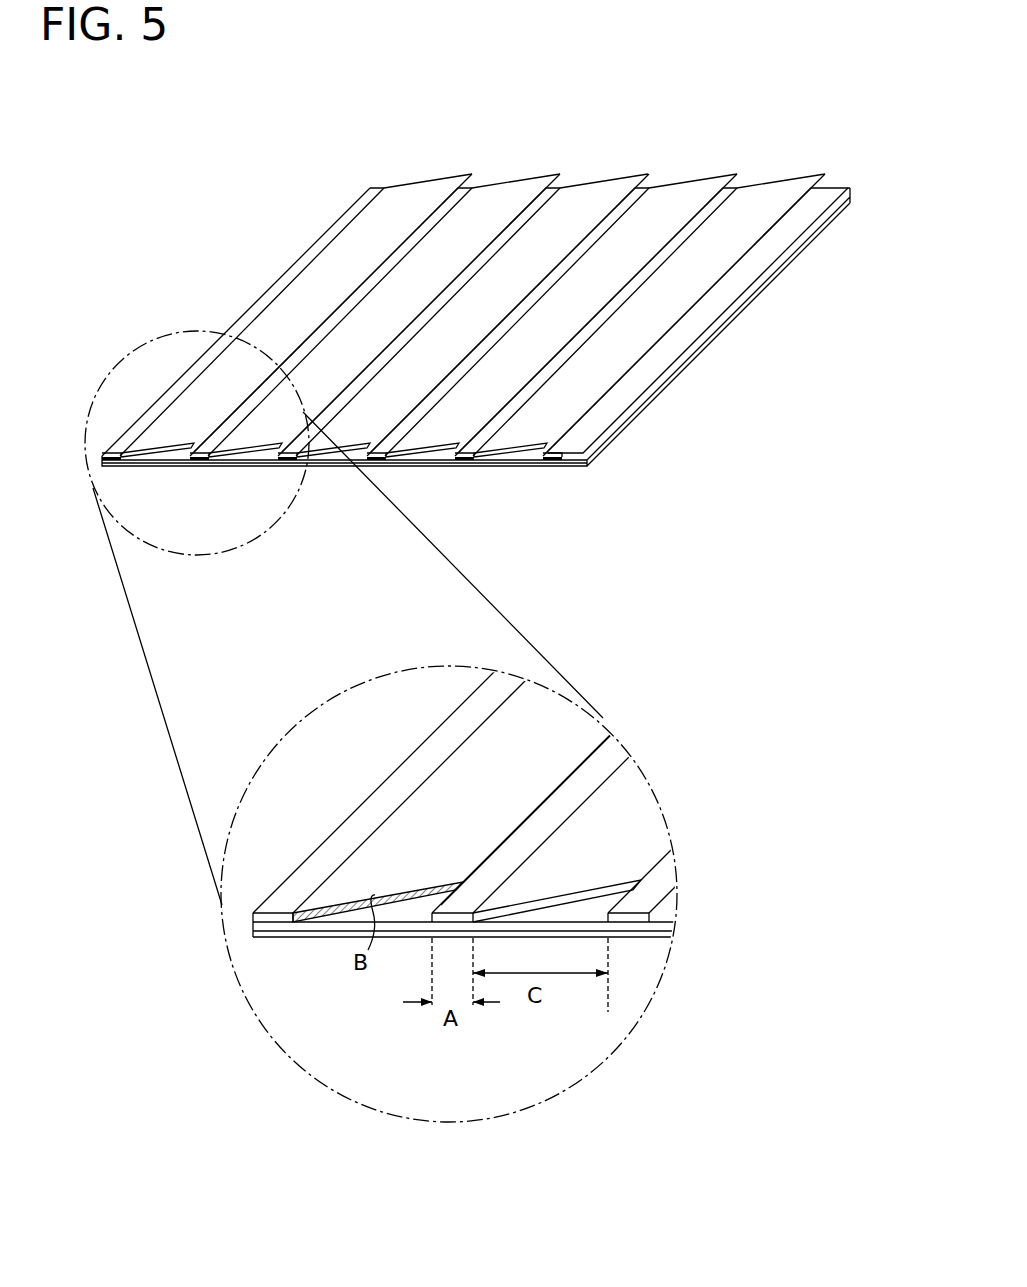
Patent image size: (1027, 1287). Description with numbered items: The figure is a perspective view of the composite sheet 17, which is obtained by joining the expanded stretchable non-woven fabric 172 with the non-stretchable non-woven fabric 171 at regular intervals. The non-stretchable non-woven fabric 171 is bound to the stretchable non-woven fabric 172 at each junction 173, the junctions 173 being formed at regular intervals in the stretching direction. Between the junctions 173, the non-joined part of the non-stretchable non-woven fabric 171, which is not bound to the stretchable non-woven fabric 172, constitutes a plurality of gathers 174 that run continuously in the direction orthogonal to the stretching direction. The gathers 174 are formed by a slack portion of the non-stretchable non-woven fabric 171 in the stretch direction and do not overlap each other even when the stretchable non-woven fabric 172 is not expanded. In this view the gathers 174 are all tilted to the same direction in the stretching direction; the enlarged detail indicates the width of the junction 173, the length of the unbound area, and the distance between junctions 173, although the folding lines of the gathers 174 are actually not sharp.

The composite sheet 17 is at (311, 185).
The non-stretchable non-woven fabric 171 is at (597, 386).
The stretchable non-woven fabric 172 is at (517, 457).
The junction 173 is at (113, 478).
The gathers 174 is at (457, 203).